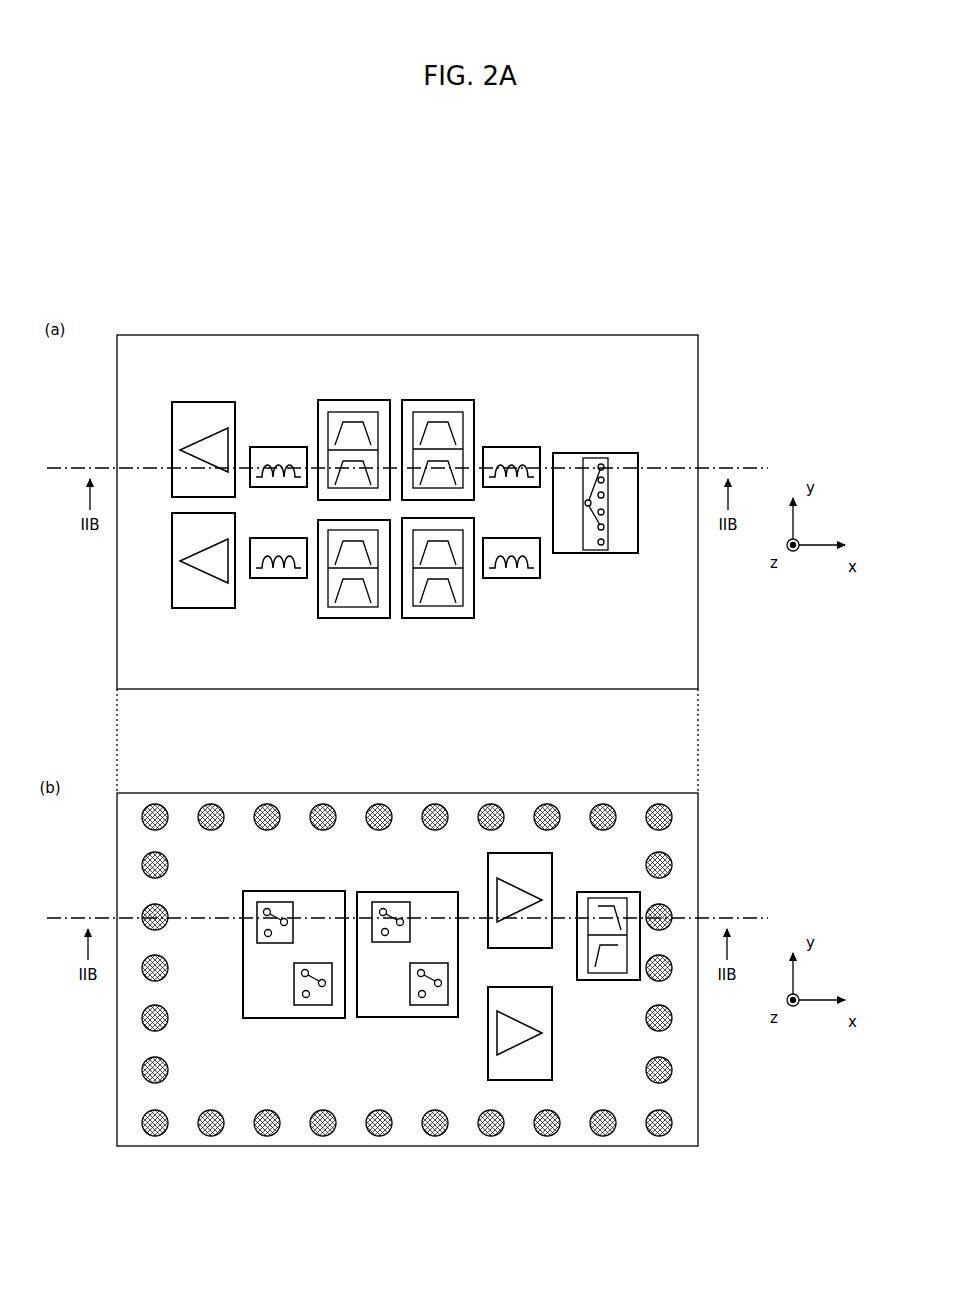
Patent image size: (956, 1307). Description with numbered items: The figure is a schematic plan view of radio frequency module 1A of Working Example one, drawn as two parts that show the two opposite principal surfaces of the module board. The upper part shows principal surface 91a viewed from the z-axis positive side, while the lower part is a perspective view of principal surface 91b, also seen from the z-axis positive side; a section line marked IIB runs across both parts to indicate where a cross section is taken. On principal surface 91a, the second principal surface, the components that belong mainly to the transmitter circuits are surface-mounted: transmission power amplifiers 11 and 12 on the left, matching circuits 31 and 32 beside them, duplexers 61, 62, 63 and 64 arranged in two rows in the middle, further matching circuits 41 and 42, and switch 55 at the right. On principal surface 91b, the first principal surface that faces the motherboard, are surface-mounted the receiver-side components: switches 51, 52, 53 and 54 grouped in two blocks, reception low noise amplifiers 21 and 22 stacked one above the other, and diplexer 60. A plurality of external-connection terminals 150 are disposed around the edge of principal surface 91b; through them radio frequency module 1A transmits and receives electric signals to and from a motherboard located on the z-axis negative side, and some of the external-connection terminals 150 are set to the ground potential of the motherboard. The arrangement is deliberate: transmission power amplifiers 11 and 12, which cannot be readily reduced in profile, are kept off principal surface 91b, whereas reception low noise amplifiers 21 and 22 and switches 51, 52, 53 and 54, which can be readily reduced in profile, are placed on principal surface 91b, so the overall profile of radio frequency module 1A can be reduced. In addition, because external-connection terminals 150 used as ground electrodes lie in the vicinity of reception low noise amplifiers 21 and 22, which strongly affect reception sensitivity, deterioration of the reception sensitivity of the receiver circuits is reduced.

The radio frequency module 1A is at (783, 362).
The transmission power amplifier 11 is at (190, 402).
The transmission power amplifier 12 is at (190, 608).
The reception low noise amplifier 21 is at (503, 853).
The reception low noise amplifier 22 is at (503, 1080).
The matching circuit 31 is at (290, 447).
The matching circuit 32 is at (285, 578).
The matching circuit 41 is at (520, 447).
The matching circuit 42 is at (518, 578).
The switch 51 is at (293, 930).
The switch 52 is at (294, 975).
The switch 53 is at (410, 930).
The switch 54 is at (410, 975).
The switch 55 is at (592, 555).
The diplexer 60 is at (597, 981).
The duplexer 61 is at (360, 400).
The duplexer 62 is at (445, 400).
The duplexer 63 is at (360, 618).
The duplexer 64 is at (445, 618).
The principal surface 91a is at (700, 347).
The principal surface 91b is at (700, 805).
The external-connection terminal 150 is at (145, 908).